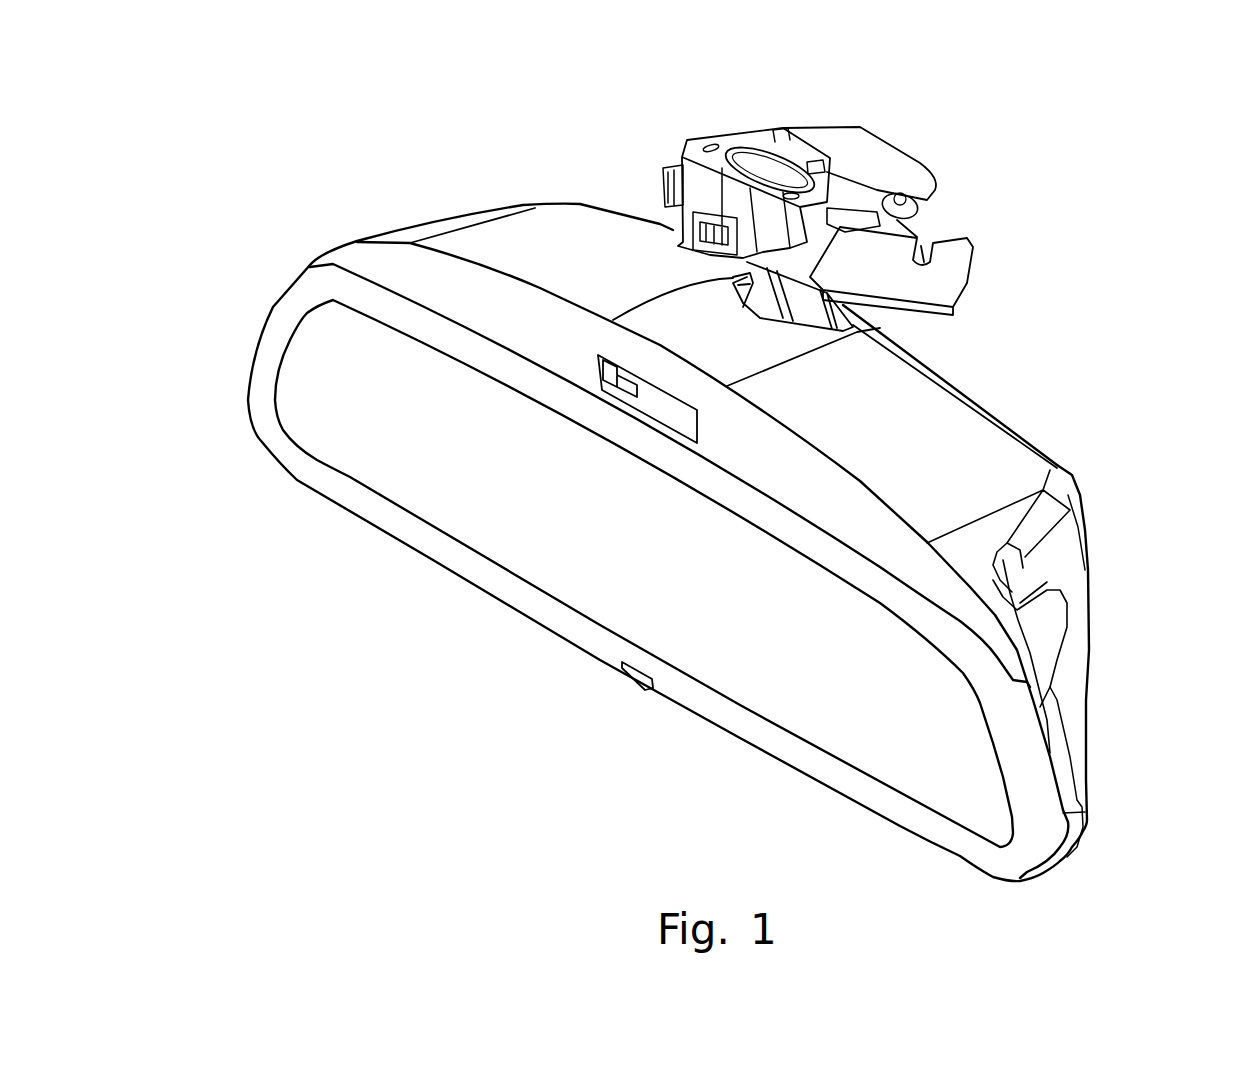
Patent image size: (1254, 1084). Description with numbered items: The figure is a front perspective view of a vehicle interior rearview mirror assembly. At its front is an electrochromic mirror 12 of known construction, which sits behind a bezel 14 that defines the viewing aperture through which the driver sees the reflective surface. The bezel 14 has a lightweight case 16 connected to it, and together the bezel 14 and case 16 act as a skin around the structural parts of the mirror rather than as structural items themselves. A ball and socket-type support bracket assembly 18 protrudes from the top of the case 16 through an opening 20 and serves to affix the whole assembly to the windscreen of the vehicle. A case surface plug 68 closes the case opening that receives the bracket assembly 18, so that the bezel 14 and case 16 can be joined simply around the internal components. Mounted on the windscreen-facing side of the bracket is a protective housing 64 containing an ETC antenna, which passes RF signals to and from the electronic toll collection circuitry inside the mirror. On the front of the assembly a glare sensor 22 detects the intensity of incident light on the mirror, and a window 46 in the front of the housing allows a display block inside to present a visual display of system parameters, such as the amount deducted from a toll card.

The electrochromic mirror 12 is at (508, 494).
The bezel 14 is at (300, 482).
The case 16 is at (1044, 428).
The ball and socket-type support bracket assembly 18 is at (747, 140).
The opening 20 is at (860, 329).
The glare sensor 22 is at (636, 681).
The window 46 is at (659, 412).
The protective housing 64 is at (890, 160).
The case surface plug 68 is at (733, 357).